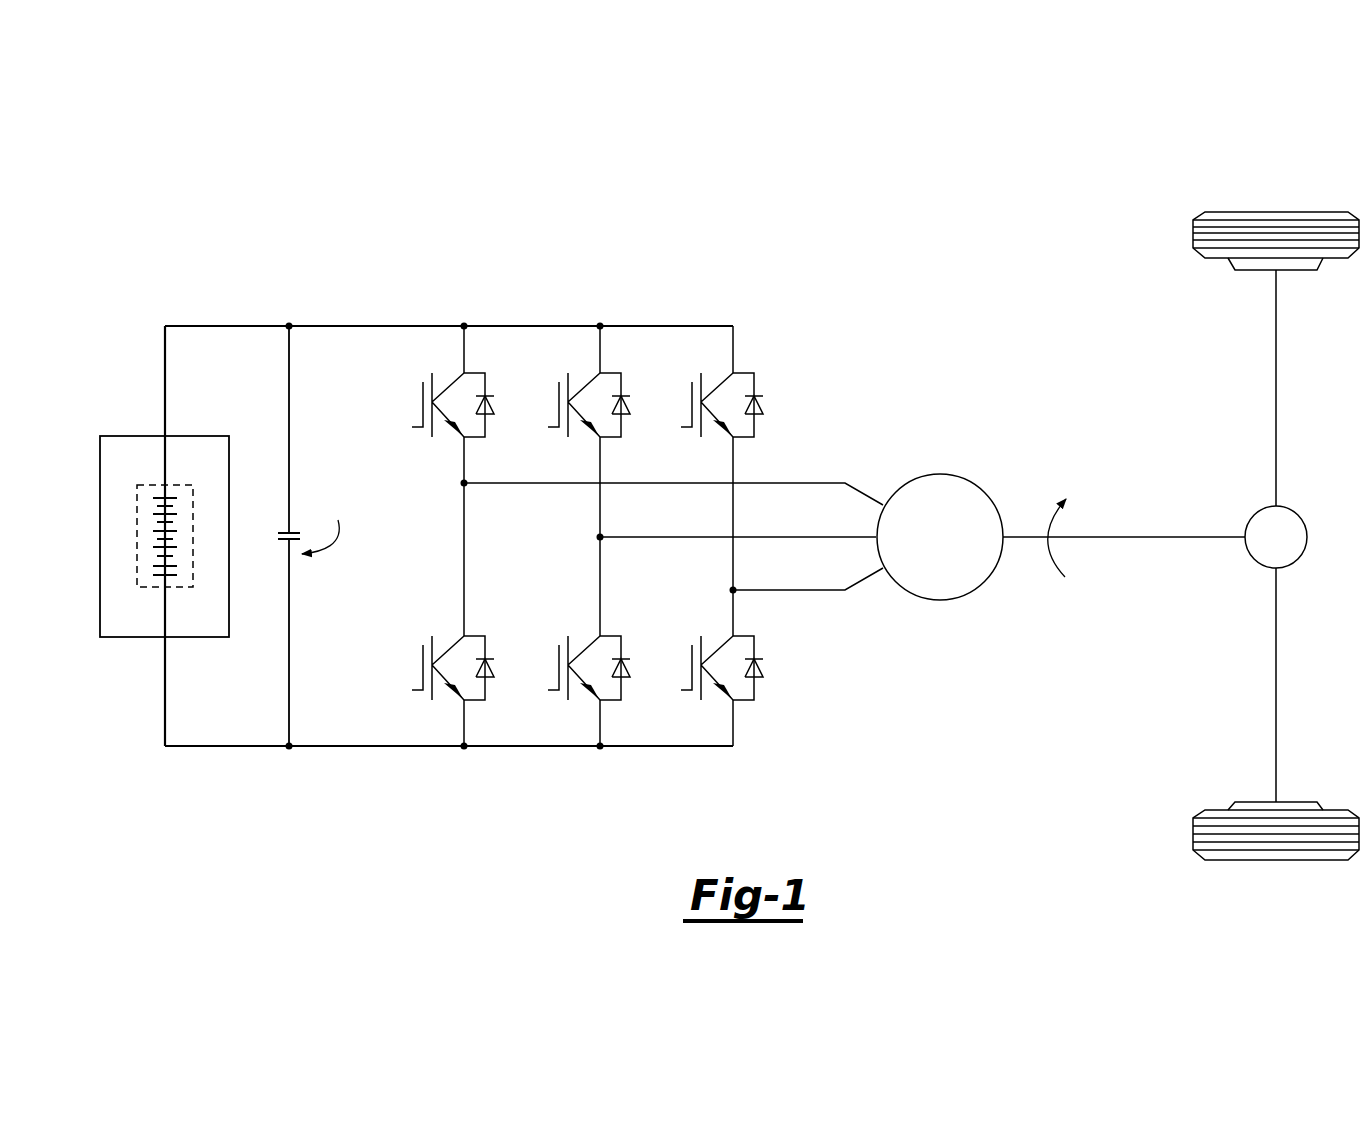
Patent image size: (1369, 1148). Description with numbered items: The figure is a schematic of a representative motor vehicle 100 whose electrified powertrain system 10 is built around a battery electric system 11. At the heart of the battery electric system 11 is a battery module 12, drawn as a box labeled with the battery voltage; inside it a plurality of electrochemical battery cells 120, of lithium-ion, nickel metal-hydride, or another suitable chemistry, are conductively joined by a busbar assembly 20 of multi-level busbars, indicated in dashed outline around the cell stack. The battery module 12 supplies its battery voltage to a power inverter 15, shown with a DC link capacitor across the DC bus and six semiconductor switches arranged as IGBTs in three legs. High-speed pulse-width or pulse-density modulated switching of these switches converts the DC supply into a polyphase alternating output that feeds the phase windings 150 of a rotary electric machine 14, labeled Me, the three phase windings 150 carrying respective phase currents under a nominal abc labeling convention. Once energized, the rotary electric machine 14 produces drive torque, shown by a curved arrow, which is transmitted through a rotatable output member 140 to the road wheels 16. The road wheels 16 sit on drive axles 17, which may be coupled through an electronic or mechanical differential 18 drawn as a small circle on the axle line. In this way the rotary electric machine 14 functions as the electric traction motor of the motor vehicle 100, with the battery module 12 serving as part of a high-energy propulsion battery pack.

The motor vehicle 100 is at (1140, 106).
The electrified powertrain system 10 is at (1012, 341).
The battery electric system 11 is at (515, 250).
The battery module 12 is at (100, 599).
The electrochemical battery cells 120 is at (146, 531).
The busbar assembly 20 is at (147, 588).
The power inverter 15 is at (752, 301).
The phase windings 150 is at (860, 431).
The rotary electric machine 14 is at (968, 478).
The rotatable output member 140 is at (1126, 537).
The differential 18 is at (1264, 553).
The drive axles 17 is at (1276, 388).
The road wheels 16 is at (1276, 212).